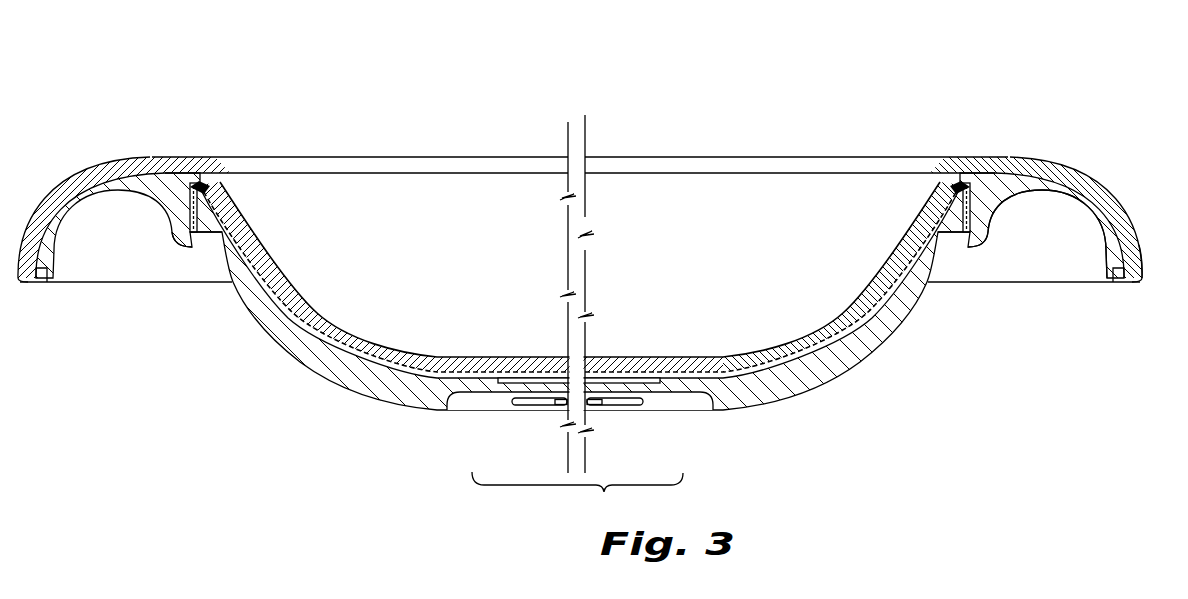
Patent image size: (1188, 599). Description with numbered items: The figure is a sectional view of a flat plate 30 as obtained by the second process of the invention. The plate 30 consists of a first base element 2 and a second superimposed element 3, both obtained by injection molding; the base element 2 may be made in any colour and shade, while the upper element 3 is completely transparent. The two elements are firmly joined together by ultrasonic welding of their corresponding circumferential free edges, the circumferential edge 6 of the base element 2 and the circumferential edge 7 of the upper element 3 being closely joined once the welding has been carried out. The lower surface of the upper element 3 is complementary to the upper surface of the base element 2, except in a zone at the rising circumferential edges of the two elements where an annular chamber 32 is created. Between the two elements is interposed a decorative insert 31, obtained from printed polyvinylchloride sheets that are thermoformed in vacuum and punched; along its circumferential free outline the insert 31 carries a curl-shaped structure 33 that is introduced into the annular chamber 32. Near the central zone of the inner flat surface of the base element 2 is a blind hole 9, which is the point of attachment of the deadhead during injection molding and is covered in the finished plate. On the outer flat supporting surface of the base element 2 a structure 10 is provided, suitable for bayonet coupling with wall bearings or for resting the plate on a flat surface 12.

The base element 2 is at (1029, 195).
The superimposed element 3 is at (1044, 162).
The circumferential edge 6 is at (1113, 287).
The circumferential edge 7 is at (1136, 270).
The blind hole 9 is at (632, 372).
The structure 10 is at (625, 402).
The flat surface 12 is at (562, 410).
The flat plate 30 is at (767, 140).
The decorative insert 31 is at (778, 362).
The annular chamber 32 is at (206, 220).
The curl-shaped structure 33 is at (194, 182).